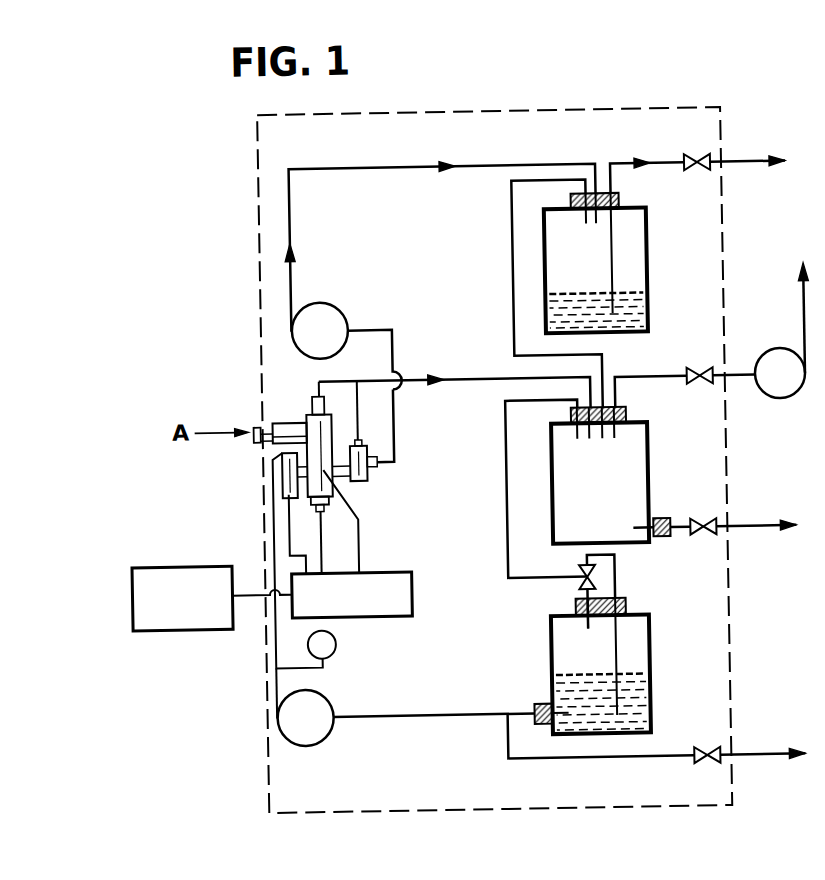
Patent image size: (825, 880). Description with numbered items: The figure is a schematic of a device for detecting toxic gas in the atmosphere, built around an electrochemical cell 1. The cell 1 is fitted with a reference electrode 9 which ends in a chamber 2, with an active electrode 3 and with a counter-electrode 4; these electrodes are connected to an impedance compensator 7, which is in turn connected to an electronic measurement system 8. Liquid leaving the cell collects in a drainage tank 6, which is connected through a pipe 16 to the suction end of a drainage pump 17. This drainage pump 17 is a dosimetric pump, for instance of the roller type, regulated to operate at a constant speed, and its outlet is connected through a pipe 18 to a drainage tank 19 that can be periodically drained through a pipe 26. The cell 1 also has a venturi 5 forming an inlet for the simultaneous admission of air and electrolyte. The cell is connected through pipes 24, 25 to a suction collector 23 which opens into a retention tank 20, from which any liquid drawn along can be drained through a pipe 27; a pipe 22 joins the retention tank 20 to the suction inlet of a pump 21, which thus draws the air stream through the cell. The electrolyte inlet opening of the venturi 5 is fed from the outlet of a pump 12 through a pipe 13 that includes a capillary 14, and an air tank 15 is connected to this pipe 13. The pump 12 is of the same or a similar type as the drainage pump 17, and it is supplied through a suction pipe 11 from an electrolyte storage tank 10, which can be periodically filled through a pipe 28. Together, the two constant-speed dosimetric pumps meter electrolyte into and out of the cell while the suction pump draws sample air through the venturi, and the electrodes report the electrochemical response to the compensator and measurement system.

The electrochemical cell 1 is at (290, 406).
The chamber 2 is at (284, 470).
The active electrode 3 is at (321, 527).
The counter-electrode 4 is at (340, 505).
The venturi 5 is at (283, 419).
The drainage tank 6 is at (360, 470).
The impedance compensator 7 is at (393, 571).
The electronic measurement system 8 is at (147, 626).
The reference electrode 9 is at (287, 520).
The electrolyte storage tank 10 is at (530, 649).
The suction pipe 11 is at (425, 717).
The pump 12 is at (322, 735).
The pipe 13 is at (269, 683).
The capillary 14 is at (270, 644).
The air tank 15 is at (332, 642).
The pipe 16 is at (398, 430).
The drainage pump 17 is at (348, 307).
The pipe 18 is at (395, 164).
The drainage tank 19 is at (668, 276).
The retention tank 20 is at (540, 500).
The pump 21 is at (774, 371).
The pipe 22 is at (654, 377).
The suction collector 23 is at (456, 381).
The pipe 24 is at (314, 379).
The pipe 25 is at (358, 418).
The pipe 26 is at (750, 169).
The pipe 27 is at (758, 527).
The pipe 28 is at (635, 760).